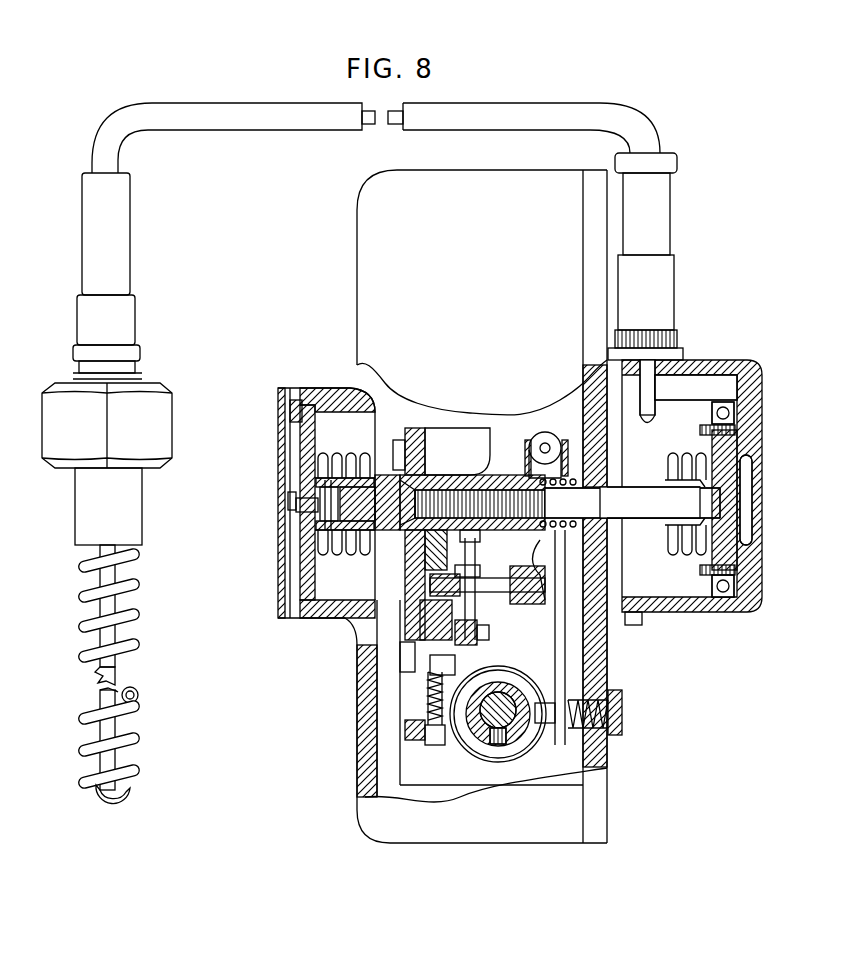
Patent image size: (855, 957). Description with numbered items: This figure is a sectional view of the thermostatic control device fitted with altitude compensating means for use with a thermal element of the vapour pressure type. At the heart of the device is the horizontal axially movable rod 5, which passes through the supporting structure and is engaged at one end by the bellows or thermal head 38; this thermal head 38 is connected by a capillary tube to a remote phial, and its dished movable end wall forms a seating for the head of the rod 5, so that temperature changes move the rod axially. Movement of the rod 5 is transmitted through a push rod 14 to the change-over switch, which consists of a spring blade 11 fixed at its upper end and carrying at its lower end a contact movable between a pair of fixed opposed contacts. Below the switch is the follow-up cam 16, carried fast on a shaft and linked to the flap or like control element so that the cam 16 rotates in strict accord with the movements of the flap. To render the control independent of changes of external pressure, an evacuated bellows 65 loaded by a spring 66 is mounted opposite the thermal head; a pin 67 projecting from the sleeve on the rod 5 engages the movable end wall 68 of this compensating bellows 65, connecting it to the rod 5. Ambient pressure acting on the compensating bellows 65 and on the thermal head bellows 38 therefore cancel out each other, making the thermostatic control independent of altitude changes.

The rod 5 is at (480, 495).
The spring blade 11 is at (472, 570).
The push rod 14 is at (490, 581).
The follow-up cam 16 is at (522, 732).
The bellows or thermal head 38 is at (682, 548).
The evacuated bellows 65 is at (344, 560).
The spring 66 is at (325, 520).
The pin 67 is at (338, 492).
The movable end wall 68 is at (357, 452).